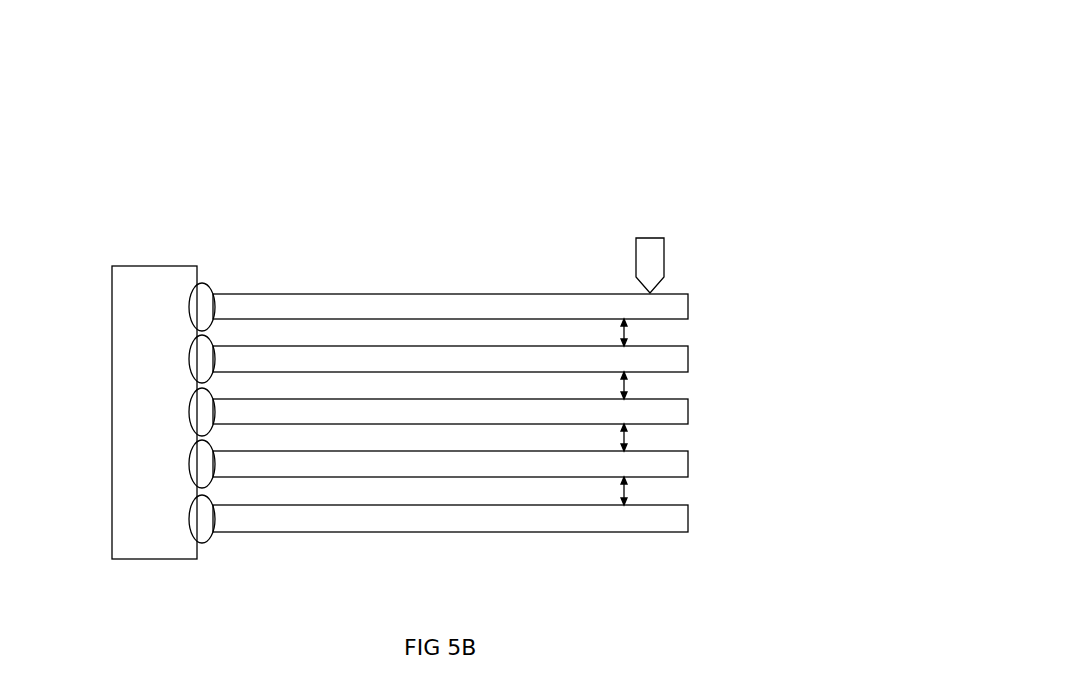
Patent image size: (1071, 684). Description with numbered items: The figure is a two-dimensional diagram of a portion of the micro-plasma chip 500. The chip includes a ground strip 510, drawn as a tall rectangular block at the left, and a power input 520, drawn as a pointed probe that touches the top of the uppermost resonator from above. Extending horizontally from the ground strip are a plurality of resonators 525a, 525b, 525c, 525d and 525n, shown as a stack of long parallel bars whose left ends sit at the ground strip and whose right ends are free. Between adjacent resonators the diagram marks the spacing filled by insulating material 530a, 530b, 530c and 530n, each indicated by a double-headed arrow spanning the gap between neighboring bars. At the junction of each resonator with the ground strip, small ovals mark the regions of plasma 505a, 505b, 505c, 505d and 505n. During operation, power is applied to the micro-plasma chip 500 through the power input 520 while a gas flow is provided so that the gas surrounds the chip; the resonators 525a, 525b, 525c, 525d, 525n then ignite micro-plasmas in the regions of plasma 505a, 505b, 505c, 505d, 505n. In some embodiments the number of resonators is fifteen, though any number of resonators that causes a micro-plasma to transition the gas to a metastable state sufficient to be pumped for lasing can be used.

The micro-plasma chip 500 is at (670, 142).
The ground strip 510 is at (112, 266).
The power input 520 is at (636, 238).
The region of plasma 505a is at (213, 297).
The region of plasma 505b is at (213, 349).
The region of plasma 505c is at (213, 402).
The region of plasma 505d is at (213, 455).
The region of plasma 505n is at (213, 508).
The resonator 525a is at (690, 310).
The resonator 525b is at (690, 361).
The resonator 525c is at (690, 418).
The resonator 525d is at (690, 466).
The resonator 525n is at (690, 516).
The insulating material 530a is at (608, 330).
The insulating material 530b is at (610, 385).
The insulating material 530c is at (610, 438).
The insulating material 530n is at (610, 490).